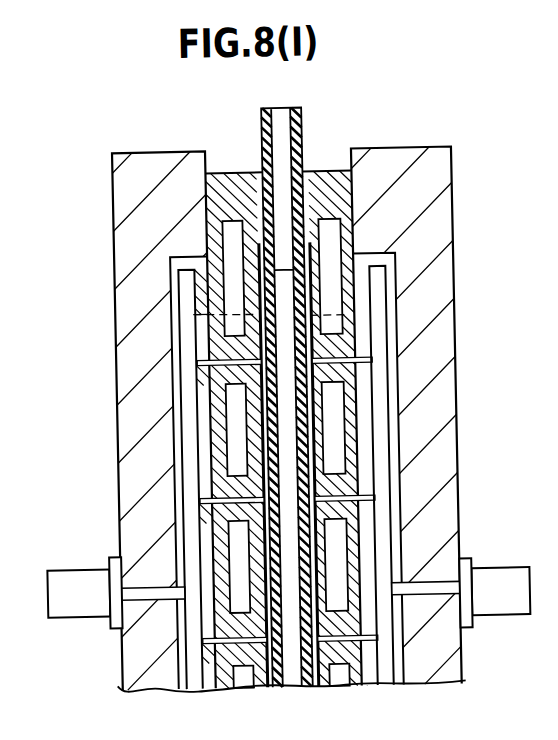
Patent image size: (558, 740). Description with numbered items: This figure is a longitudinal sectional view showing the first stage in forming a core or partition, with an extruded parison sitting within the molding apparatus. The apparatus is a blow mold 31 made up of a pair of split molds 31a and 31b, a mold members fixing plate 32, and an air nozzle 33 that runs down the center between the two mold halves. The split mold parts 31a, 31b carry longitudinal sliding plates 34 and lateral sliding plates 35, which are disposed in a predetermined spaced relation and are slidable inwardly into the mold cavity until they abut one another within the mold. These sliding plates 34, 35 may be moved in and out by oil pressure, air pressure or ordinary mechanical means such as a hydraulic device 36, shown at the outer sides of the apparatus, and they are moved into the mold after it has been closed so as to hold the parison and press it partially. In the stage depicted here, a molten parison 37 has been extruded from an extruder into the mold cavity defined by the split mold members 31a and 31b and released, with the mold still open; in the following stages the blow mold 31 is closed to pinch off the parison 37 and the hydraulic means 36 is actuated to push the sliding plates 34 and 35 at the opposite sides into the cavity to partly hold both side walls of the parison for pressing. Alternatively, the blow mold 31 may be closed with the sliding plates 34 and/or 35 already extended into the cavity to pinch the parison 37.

The blow mold 31 is at (290, 386).
The split mold 31a is at (219, 189).
The split mold 31b is at (346, 194).
The mold members fixing plate 32 is at (137, 214).
The air nozzle 33 is at (285, 143).
The longitudinal sliding plate 34 is at (209, 332).
The lateral sliding plate 35 is at (216, 361).
The hydraulic device 36 is at (493, 586).
The molten parison 37 is at (261, 447).